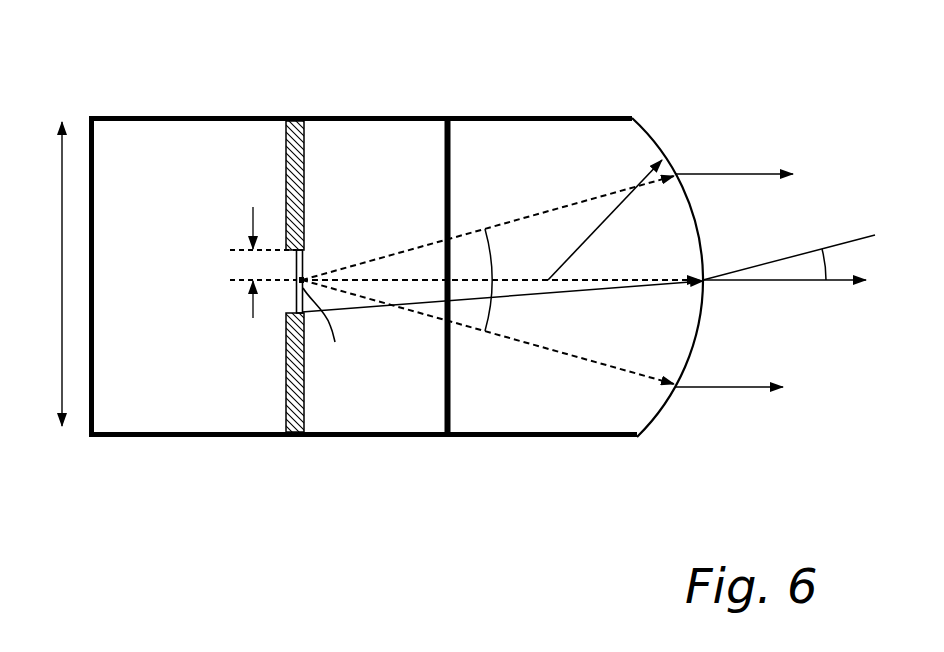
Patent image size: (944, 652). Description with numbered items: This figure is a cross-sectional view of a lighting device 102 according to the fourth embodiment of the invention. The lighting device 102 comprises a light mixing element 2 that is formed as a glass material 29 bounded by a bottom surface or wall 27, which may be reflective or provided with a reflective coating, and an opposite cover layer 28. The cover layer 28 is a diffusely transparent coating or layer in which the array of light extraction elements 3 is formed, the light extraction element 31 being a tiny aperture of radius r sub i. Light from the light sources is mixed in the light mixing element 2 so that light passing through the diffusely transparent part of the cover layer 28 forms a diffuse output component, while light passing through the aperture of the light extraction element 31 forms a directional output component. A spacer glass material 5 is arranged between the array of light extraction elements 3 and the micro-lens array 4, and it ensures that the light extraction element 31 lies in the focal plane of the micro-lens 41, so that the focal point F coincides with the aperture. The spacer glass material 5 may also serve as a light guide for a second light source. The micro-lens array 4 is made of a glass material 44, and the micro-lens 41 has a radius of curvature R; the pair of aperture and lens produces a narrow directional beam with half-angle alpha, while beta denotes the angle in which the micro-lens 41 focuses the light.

The lighting device 102 is at (70, 88).
The light mixing element 2 is at (181, 116).
The array of light extraction elements 3 is at (296, 104).
The micro-lens array 4 is at (545, 118).
The spacer glass material 5 is at (388, 138).
The bottom surface or wall 27 is at (95, 258).
The cover layer 28 is at (286, 172).
The glass material 29 is at (226, 418).
The light extraction element 31 is at (302, 268).
The micro-lens 41 is at (700, 338).
The glass material 44 is at (617, 412).